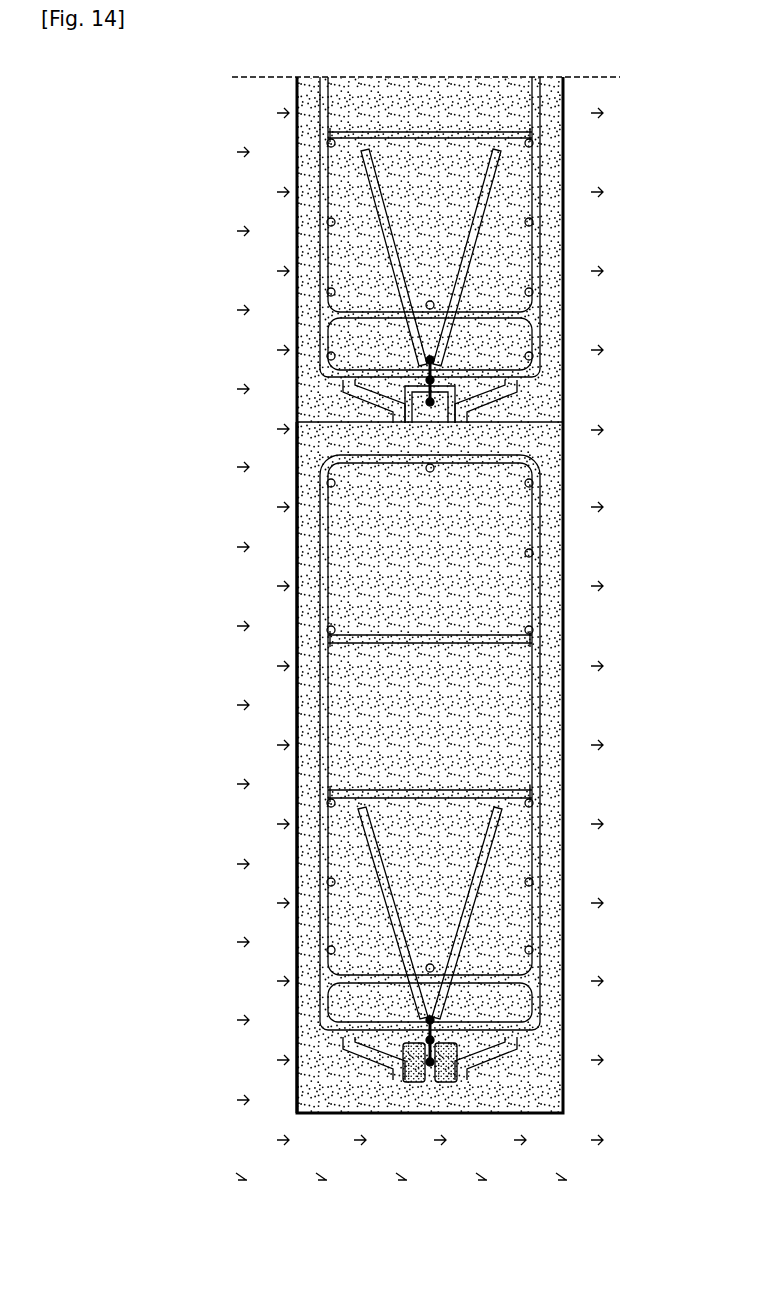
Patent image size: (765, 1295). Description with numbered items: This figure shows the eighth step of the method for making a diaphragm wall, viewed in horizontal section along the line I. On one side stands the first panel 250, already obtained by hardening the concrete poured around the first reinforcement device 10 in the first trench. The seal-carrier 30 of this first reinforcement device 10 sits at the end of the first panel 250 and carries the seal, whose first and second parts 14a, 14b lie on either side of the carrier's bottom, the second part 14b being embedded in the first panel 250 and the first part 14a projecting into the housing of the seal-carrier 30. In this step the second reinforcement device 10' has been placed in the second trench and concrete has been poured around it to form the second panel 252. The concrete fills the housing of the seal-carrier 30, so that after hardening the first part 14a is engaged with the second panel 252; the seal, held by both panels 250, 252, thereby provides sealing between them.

The first reinforcement device 10 is at (475, 595).
The second reinforcement device 10' is at (246, 767).
The first panel 250 is at (318, 397).
The second panel 252 is at (552, 1042).
The seal-carrier 30 is at (410, 404).
The first part of the seal 14a is at (440, 388).
The second part of the seal 14b is at (422, 366).
The section line I is at (537, 424).